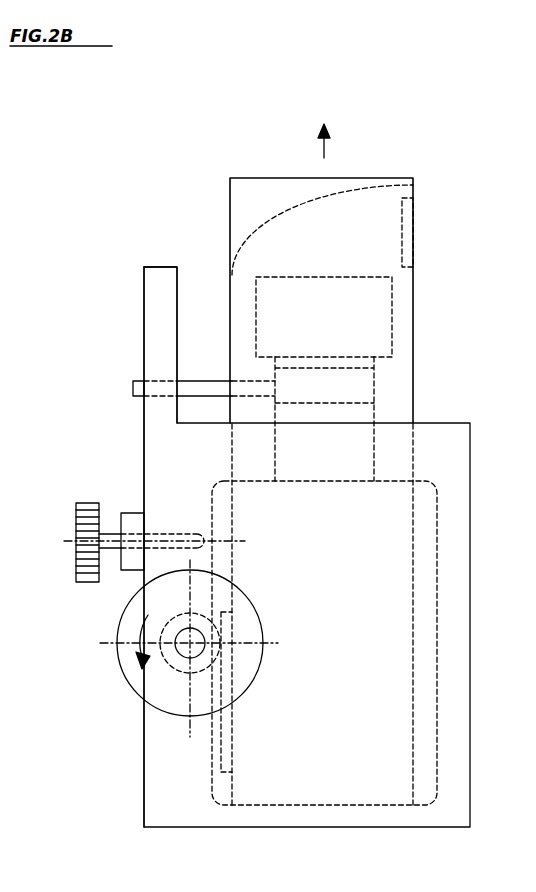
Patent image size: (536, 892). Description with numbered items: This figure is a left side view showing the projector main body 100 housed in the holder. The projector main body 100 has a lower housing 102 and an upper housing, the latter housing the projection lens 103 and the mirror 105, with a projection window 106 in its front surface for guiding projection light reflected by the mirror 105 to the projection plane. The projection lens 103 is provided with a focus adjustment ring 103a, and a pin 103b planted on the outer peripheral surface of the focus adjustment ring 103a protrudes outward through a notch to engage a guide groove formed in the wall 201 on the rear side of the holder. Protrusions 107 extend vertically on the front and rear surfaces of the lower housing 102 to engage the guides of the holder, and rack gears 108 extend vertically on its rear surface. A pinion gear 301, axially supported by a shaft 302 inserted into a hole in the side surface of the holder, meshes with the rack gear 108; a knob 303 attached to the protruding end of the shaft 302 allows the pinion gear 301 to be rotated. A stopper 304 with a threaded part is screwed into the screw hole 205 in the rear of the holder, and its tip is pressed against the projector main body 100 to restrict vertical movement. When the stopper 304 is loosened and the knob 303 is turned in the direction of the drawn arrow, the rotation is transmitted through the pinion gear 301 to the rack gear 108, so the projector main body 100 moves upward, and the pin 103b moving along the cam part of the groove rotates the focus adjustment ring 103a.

The projector main body 100 is at (217, 216).
The lower housing 102 is at (388, 625).
The projection lens 103 is at (382, 320).
The focus adjustment ring 103a is at (367, 393).
The pin 103b is at (134, 381).
The mirror 105 is at (282, 210).
The projection window 106 is at (417, 207).
The protrusions 107 is at (427, 527).
The rack gears 108 is at (230, 750).
The wall 201 is at (156, 267).
The screw hole 205 is at (128, 532).
The pinion gears 301 is at (183, 672).
The shafts 302 is at (200, 632).
The knobs 303 is at (125, 665).
The stopper 304 is at (90, 503).